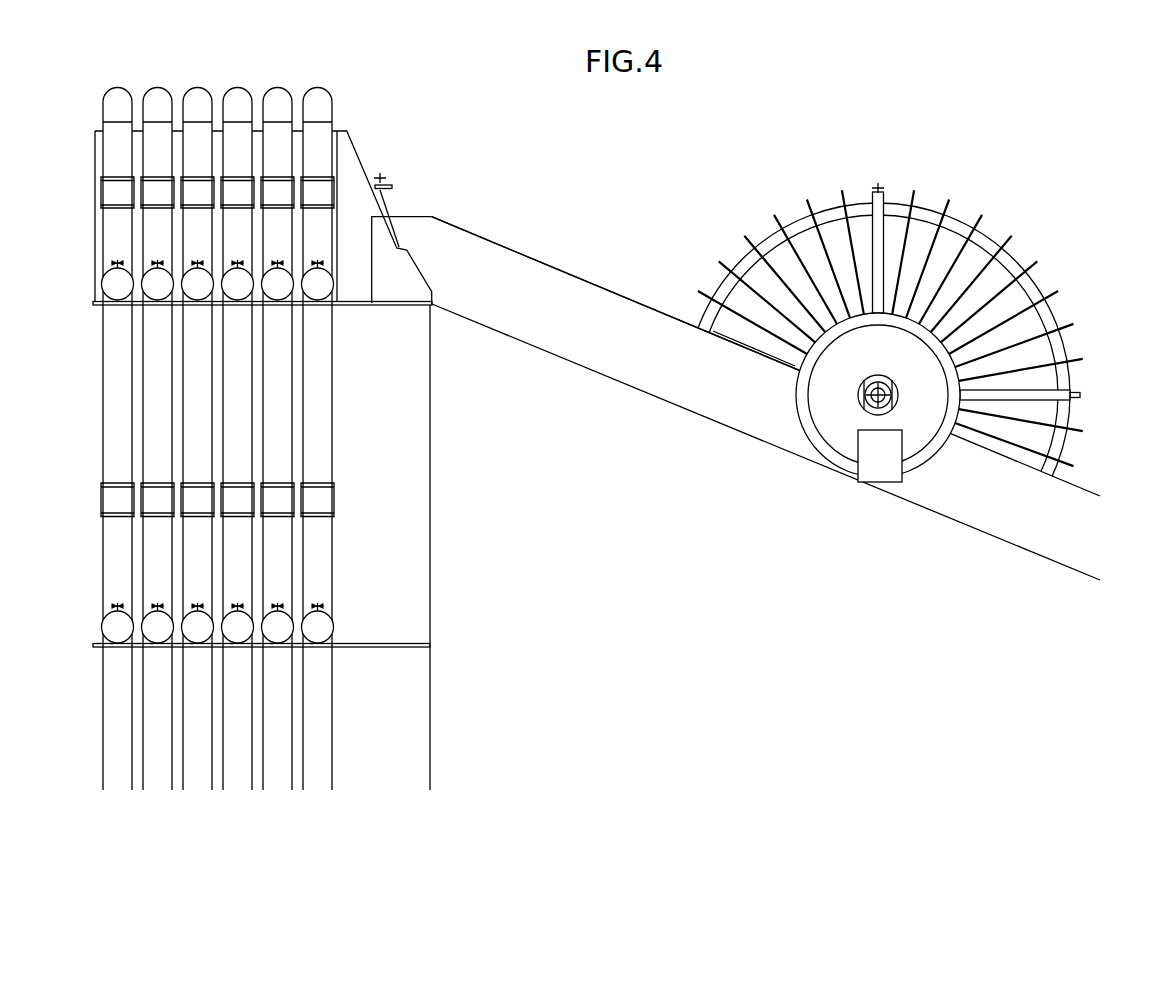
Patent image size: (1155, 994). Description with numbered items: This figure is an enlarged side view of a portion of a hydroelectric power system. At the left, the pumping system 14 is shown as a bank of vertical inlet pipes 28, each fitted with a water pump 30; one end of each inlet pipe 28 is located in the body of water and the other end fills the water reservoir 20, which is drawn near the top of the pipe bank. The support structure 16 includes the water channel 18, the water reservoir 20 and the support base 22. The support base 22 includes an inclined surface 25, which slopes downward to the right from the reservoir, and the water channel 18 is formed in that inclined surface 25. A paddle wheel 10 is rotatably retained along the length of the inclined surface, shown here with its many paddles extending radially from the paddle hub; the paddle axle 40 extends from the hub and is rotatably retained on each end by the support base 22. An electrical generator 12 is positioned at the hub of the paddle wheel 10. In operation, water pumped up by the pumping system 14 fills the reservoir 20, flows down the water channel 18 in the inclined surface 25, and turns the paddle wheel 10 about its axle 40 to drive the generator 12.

The paddle wheel 10 is at (930, 198).
The electrical generator 12 is at (830, 432).
The pumping system 14 is at (358, 134).
The support structure 16 is at (505, 239).
The water channel 18 is at (520, 300).
The water reservoir 20 is at (358, 174).
The support base 22 is at (799, 707).
The inclined surface 25 is at (623, 295).
The inlet pipe 28 is at (313, 452).
The water pump 30 is at (322, 290).
The paddle axle 40 is at (890, 395).